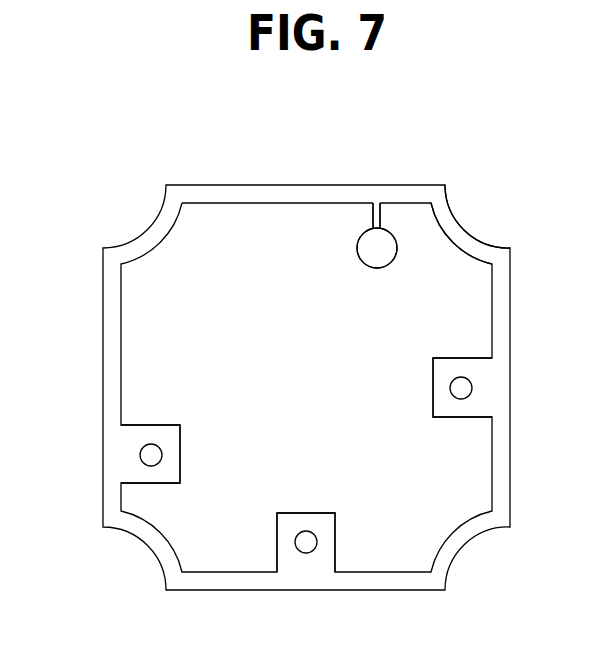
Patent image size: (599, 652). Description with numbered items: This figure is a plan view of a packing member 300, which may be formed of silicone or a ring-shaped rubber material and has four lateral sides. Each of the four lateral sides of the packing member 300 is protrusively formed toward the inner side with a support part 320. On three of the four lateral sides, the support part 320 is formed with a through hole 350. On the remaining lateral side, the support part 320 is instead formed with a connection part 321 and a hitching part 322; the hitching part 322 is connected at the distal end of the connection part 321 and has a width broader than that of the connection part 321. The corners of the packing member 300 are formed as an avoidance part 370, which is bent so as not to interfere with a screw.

The packing member 300 is at (210, 185).
The support part 320 is at (423, 133).
The connection part 321 is at (373, 208).
The hitching part 322 is at (380, 243).
The through hole 350 is at (148, 451).
The avoidance part 370 is at (462, 230).